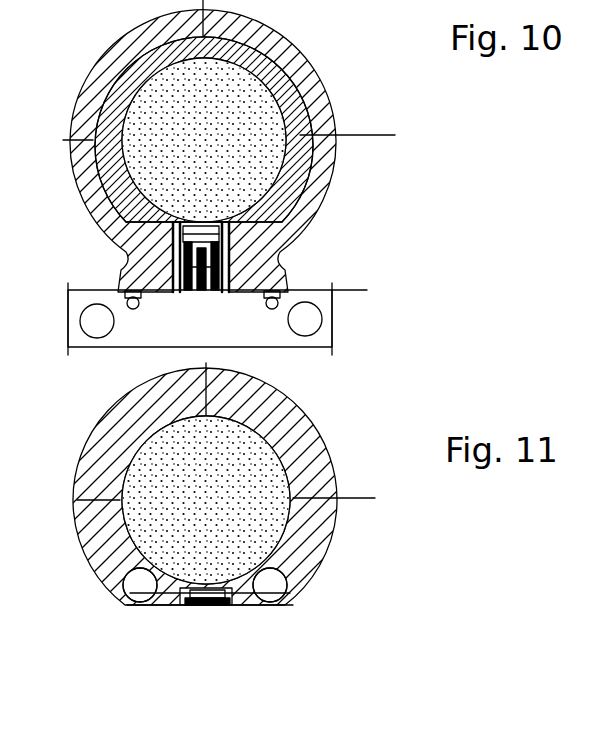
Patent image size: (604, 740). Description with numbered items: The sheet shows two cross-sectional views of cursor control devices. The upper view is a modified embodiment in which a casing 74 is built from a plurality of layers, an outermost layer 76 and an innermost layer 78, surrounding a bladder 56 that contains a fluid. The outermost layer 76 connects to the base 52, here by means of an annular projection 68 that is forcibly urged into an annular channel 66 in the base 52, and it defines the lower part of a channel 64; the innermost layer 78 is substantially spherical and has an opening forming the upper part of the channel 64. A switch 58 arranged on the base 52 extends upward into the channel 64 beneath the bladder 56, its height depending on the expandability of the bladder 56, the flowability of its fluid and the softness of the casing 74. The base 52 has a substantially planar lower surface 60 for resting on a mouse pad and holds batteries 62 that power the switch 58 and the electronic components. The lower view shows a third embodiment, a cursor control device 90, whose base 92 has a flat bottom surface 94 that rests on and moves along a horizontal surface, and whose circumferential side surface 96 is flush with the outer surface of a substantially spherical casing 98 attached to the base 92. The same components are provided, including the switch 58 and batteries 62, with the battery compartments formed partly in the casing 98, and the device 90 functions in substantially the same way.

In FIG. 10, the base 52 is at (333, 315).
In FIG. 10, the bladder 56 is at (253, 110).
In FIG. 11, the bladder 56 is at (265, 496).
In FIG. 10, the switch 58 is at (232, 267).
In FIG. 11, the switch 58 is at (212, 606).
In FIG. 10, the lower surface 60 is at (292, 348).
In FIG. 10, the batteries 62 is at (88, 323).
In FIG. 11, the batteries 62 is at (271, 596).
In FIG. 10, the channel 64 is at (172, 260).
In FIG. 11, the channel 64 is at (183, 606).
In FIG. 10, the annular channel 66 is at (132, 347).
In FIG. 10, the annular projection 68 is at (68, 291).
In FIG. 10, the casing 74 is at (357, 109).
In FIG. 10, the outermost layer 76 is at (327, 160).
In FIG. 10, the innermost layer 78 is at (285, 193).
In FIG. 11, the cursor control device 90 is at (362, 432).
In FIG. 11, the base 92 is at (124, 618).
In FIG. 11, the bottom surface 94 is at (155, 606).
In FIG. 11, the circumferential side surface 96 is at (282, 601).
In FIG. 11, the casing 98 is at (312, 550).